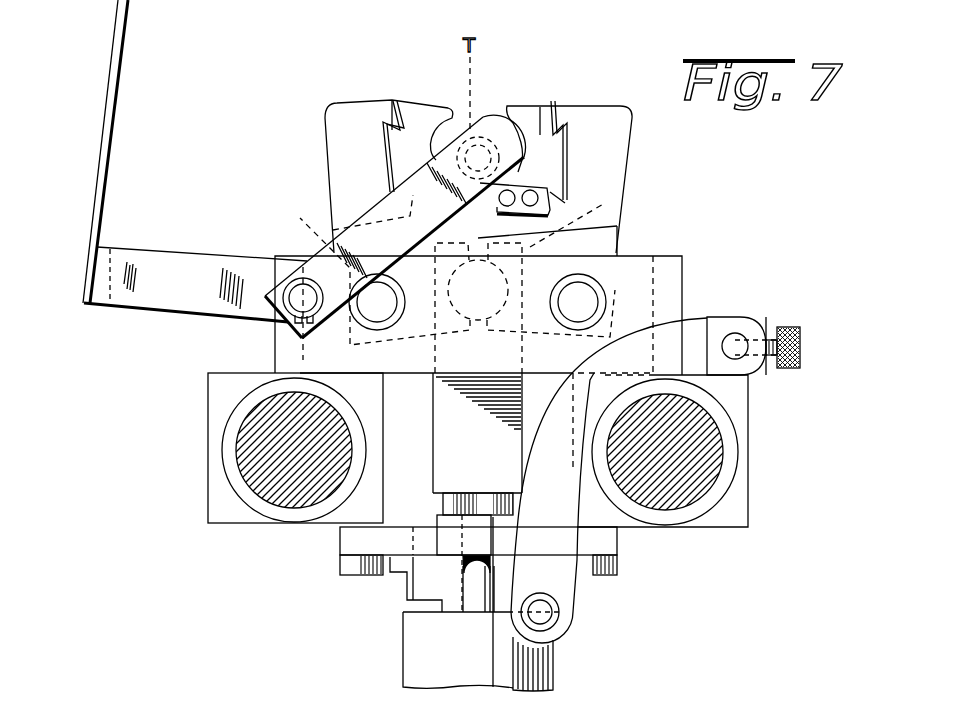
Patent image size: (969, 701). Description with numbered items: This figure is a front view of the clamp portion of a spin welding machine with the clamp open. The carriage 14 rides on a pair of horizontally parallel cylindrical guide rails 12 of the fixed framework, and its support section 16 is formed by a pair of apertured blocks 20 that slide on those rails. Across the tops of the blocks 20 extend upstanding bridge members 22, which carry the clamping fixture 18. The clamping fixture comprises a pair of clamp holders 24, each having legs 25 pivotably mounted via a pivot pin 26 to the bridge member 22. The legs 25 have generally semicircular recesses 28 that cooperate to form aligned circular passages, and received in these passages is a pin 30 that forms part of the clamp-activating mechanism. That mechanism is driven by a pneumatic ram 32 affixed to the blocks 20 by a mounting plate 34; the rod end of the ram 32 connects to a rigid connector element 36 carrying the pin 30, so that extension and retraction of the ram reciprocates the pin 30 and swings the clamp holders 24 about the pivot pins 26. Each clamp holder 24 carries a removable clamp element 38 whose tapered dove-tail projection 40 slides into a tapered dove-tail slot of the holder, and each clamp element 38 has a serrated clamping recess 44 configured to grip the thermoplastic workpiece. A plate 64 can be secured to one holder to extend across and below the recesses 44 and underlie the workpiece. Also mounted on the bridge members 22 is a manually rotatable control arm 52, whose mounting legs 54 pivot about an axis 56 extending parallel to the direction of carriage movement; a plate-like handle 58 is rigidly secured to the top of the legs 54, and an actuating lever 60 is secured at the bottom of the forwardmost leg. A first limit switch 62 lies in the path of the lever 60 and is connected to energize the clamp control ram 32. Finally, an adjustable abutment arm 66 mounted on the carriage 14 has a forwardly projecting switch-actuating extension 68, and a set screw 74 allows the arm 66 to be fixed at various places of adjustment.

The cylindrical guide rails 12 is at (248, 462).
The carriage 14 is at (716, 222).
The support section 16 is at (801, 435).
The clamping fixture 18 is at (676, 154).
The apertured blocks 20 is at (217, 502).
The bridge members 22 is at (273, 352).
The clamp holders 24 is at (330, 114).
The legs 25 is at (618, 240).
The pivot pin 26 is at (592, 300).
The semicircular recesses 28 is at (606, 203).
The pin 30 is at (340, 248).
The pneumatic ram 32 is at (407, 650).
The mounting plate 34 is at (340, 538).
The rigid connector element 36 is at (457, 473).
The clamp element 38 is at (408, 102).
The tapered dove-tail projection 40 is at (383, 147).
The serrated clamping recesses 44 is at (448, 117).
The control arm 52 is at (80, 151).
The mounting legs 54 is at (155, 262).
The axis 56 is at (297, 297).
The handle 58 is at (107, 144).
The actuating lever 60 is at (367, 213).
The first limit switch 62 is at (453, 544).
The plate 64 is at (548, 188).
The adjustable abutment arm 66 is at (609, 504).
The switch-actuating extension 68 is at (545, 622).
The set screw 74 is at (800, 329).